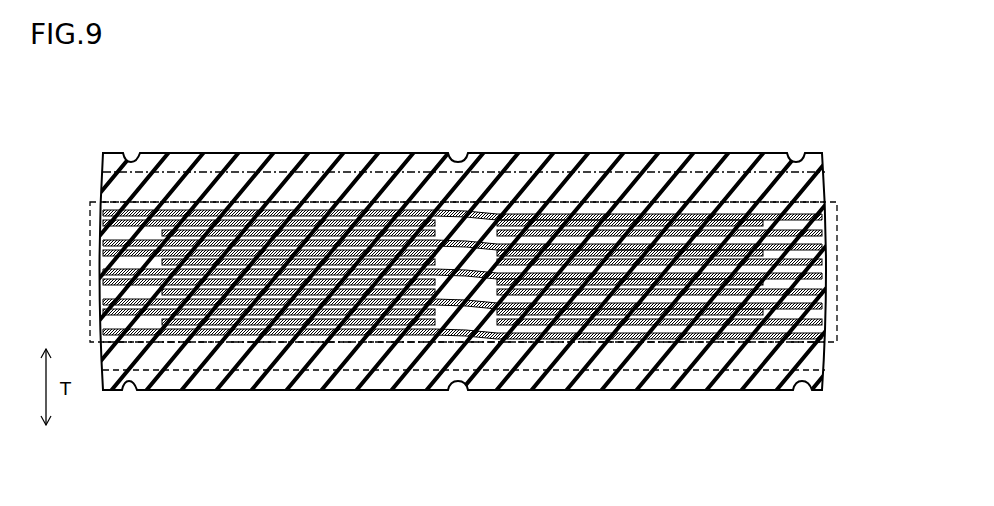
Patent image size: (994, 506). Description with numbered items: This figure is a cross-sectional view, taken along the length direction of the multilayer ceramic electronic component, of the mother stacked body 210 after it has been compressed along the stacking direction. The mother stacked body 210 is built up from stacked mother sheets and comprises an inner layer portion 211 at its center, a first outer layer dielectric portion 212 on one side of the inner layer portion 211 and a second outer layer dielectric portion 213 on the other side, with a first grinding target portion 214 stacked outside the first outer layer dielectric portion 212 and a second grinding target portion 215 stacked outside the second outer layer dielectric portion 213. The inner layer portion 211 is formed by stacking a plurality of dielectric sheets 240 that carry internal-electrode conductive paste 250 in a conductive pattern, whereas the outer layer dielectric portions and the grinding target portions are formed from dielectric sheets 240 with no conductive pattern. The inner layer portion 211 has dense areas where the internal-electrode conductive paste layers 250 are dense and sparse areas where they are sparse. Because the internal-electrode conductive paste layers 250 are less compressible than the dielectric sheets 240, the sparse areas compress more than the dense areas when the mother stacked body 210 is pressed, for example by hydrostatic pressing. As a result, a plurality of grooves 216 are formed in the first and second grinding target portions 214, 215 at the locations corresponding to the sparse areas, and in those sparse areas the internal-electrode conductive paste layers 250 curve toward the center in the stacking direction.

The mother stacked body 210 is at (854, 115).
The inner layer portion 211 is at (686, 188).
The first outer layer dielectric portion 212 is at (808, 194).
The second outer layer dielectric portion 213 is at (815, 372).
The first grinding target portion 214 is at (497, 160).
The second grinding target portion 215 is at (812, 390).
The groove 216 is at (132, 148).
The dielectric sheet 240 is at (103, 312).
The internal-electrode conductive paste layer 250 is at (826, 332).